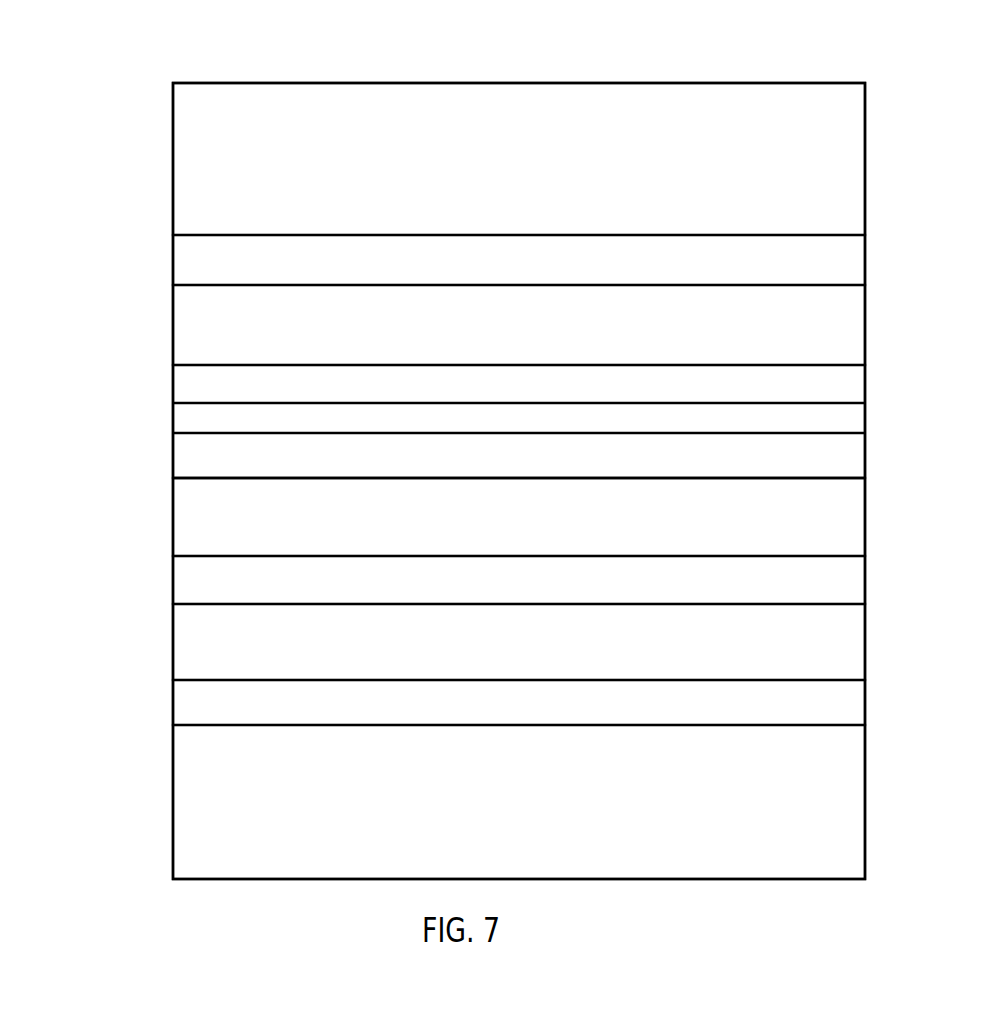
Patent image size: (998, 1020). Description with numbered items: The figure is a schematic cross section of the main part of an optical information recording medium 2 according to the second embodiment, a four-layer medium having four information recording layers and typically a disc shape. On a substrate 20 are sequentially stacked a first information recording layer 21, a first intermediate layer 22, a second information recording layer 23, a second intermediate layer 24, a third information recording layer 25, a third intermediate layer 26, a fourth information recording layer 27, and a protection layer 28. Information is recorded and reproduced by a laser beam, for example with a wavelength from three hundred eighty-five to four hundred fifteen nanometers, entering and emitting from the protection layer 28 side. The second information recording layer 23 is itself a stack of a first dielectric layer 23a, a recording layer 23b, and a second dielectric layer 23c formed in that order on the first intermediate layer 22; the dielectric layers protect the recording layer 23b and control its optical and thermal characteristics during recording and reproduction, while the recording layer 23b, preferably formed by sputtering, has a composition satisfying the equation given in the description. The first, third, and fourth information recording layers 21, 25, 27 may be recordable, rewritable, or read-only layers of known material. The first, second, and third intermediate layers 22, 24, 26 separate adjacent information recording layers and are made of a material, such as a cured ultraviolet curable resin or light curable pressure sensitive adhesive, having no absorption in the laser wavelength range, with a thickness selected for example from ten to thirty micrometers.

The optical information recording medium 2 is at (922, 90).
The substrate 20 is at (843, 160).
The first information recording layer 21 is at (843, 258).
The first intermediate layer 22 is at (843, 329).
The second information recording layer 23 is at (873, 365).
The first dielectric layer 23a is at (186, 388).
The recording layer 23b is at (188, 417).
The second dielectric layer 23c is at (188, 458).
The second intermediate layer 24 is at (843, 522).
The third information recording layer 25 is at (843, 582).
The third intermediate layer 26 is at (843, 651).
The fourth information recording layer 27 is at (843, 709).
The protection layer 28 is at (843, 813).